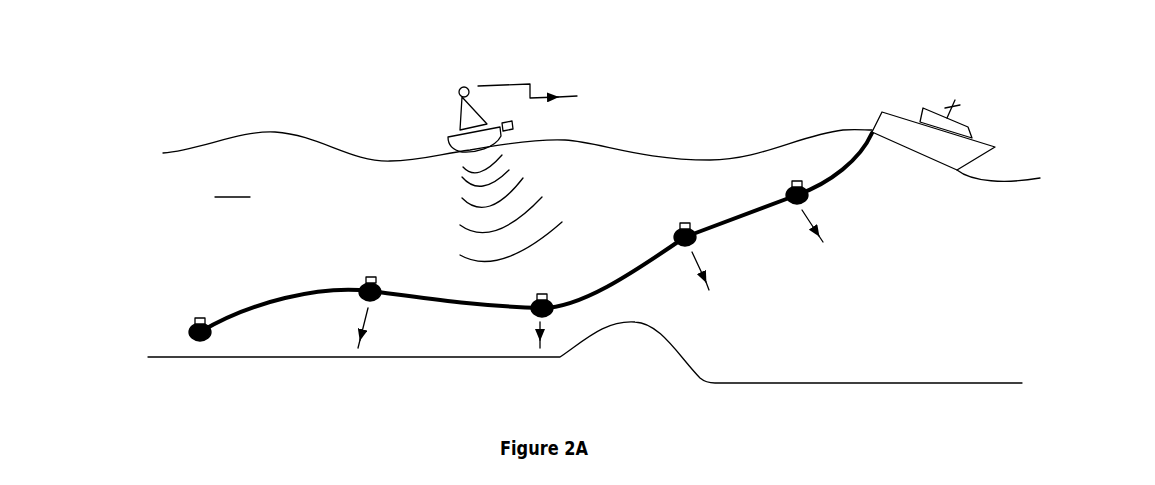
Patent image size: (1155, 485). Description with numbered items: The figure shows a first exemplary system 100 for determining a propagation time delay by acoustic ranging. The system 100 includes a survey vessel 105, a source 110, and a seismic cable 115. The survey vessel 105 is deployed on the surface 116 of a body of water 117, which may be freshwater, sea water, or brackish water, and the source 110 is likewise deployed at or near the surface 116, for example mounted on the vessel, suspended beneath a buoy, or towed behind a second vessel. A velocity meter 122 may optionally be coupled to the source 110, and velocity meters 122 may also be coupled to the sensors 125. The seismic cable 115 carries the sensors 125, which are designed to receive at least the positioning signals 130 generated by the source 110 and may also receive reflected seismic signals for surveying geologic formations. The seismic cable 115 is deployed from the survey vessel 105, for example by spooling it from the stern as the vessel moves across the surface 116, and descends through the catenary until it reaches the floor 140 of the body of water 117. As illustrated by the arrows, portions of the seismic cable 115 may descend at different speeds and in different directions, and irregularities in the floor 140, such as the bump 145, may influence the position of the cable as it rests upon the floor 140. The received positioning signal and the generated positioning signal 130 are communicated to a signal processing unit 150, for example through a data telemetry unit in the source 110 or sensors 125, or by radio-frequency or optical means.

The first exemplary system 100 is at (1022, 280).
The survey vessel 105 is at (982, 140).
The source 110 is at (453, 130).
The seismic cable 115 is at (307, 298).
The surface 116 is at (250, 140).
The body of water 117 is at (232, 191).
The velocity meter 122 is at (513, 124).
The sensors 125 is at (190, 327).
The positioning signals 130 is at (452, 210).
The floor 140 is at (877, 382).
The bump 145 is at (667, 337).
The signal processing unit 150 is at (932, 112).